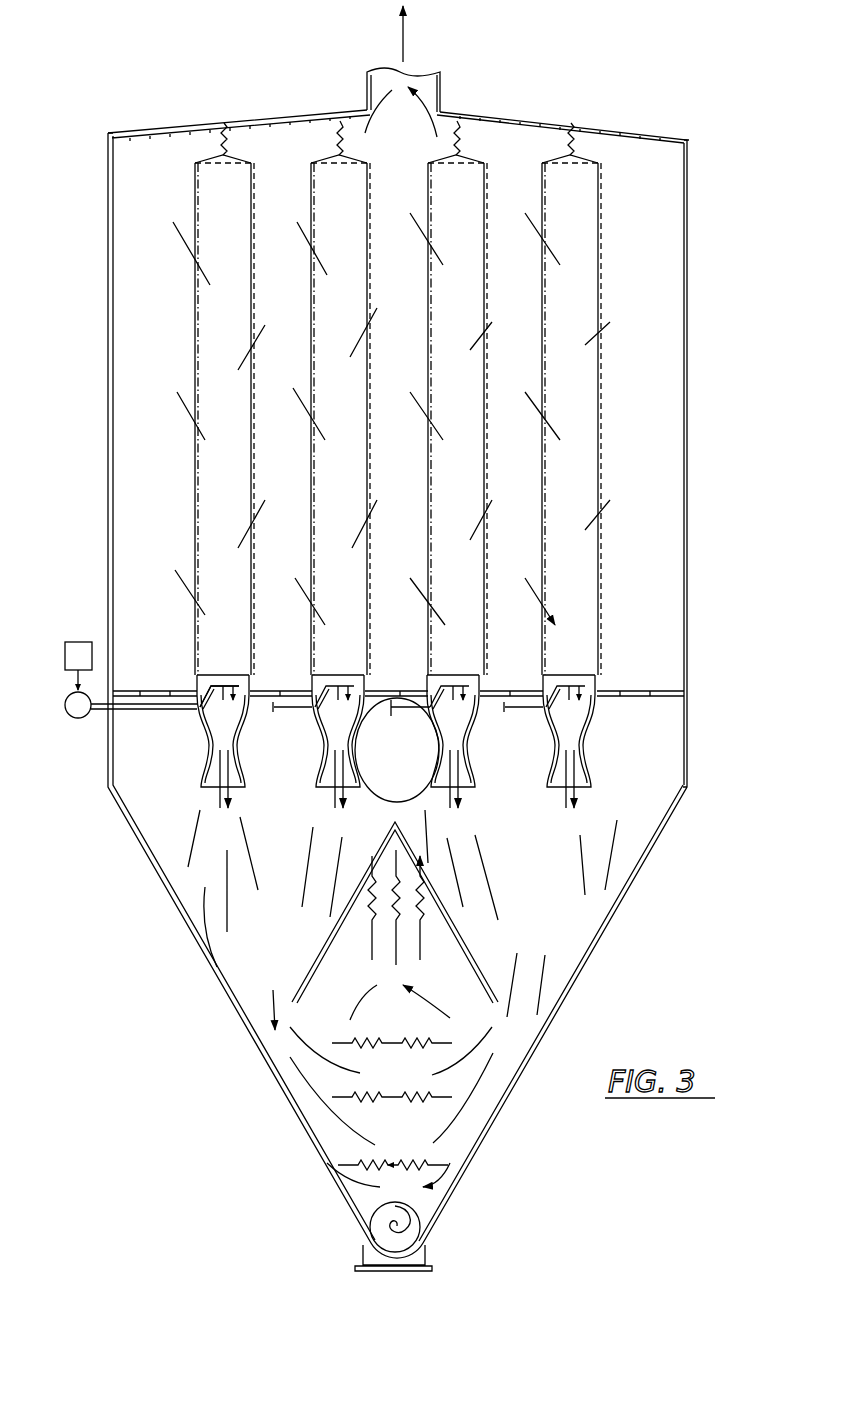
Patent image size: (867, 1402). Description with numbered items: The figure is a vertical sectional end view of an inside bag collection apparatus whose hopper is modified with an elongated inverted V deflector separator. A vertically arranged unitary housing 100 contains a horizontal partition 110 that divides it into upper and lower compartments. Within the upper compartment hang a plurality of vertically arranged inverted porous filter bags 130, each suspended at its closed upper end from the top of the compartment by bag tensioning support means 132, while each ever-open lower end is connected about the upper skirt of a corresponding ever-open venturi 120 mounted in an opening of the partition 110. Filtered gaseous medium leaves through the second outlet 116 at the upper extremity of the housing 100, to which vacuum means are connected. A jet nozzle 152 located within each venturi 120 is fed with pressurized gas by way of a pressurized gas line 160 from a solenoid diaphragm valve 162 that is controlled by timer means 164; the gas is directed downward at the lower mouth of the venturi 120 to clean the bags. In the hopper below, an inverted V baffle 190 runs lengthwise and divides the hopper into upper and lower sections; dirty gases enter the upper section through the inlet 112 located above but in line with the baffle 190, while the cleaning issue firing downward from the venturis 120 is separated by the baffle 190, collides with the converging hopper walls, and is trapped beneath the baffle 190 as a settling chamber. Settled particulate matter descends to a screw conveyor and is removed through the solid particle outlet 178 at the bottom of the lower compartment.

The housing 100 is at (690, 414).
The horizontal partition 110 is at (663, 693).
The horizontal inlet 112 is at (412, 762).
The second outlet 116 is at (425, 70).
The venturi 120 is at (588, 758).
The inverted porous filter bag 130 is at (598, 567).
The bag tensioning support means 132 is at (340, 142).
The jet nozzle 152 is at (221, 684).
The compressed air manifold 160 is at (180, 708).
The solenoid diaphragm valve 162 is at (78, 718).
The timer means 164 is at (80, 642).
The solid particle outlet 178 is at (420, 1268).
The inverted V baffle 190 is at (470, 948).